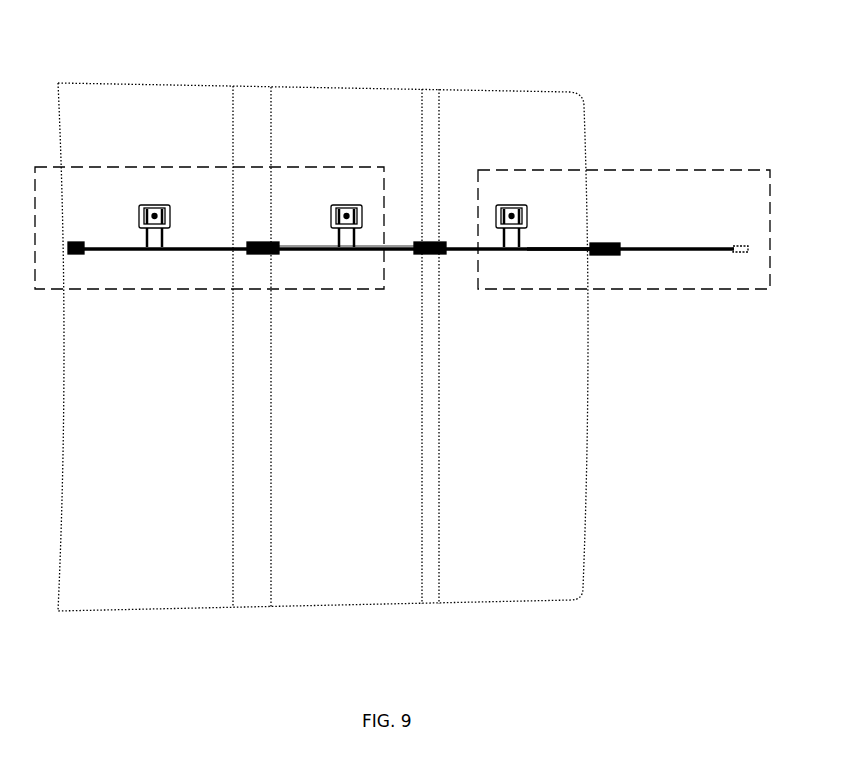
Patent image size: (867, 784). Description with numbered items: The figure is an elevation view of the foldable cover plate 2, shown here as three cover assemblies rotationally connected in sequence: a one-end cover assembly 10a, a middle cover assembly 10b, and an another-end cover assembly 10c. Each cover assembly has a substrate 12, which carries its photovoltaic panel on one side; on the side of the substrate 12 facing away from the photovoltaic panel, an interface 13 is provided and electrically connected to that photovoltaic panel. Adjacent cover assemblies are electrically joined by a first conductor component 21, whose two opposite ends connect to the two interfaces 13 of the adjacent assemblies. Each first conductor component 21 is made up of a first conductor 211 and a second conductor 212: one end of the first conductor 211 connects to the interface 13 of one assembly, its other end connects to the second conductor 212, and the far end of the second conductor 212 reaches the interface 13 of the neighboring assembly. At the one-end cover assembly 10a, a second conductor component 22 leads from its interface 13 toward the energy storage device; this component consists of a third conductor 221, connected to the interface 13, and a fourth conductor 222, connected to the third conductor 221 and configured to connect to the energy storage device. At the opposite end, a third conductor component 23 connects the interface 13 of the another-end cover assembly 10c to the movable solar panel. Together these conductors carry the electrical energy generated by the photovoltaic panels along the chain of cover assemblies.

The foldable cover plate 2 is at (352, 15).
The substrate 12 is at (132, 110).
The interface 13 is at (154, 205).
The first conductor component 21 is at (253, 243).
The second conductor component 22 is at (637, 308).
The third conductor component 23 is at (90, 248).
The first conductor 211 is at (182, 249).
The second conductor 212 is at (302, 249).
The third conductor 221 is at (550, 248).
The fourth conductor 222 is at (648, 248).
The one-end cover assembly 10a is at (515, 561).
The middle cover assembly 10b is at (334, 563).
The another-end cover assembly 10c is at (138, 565).